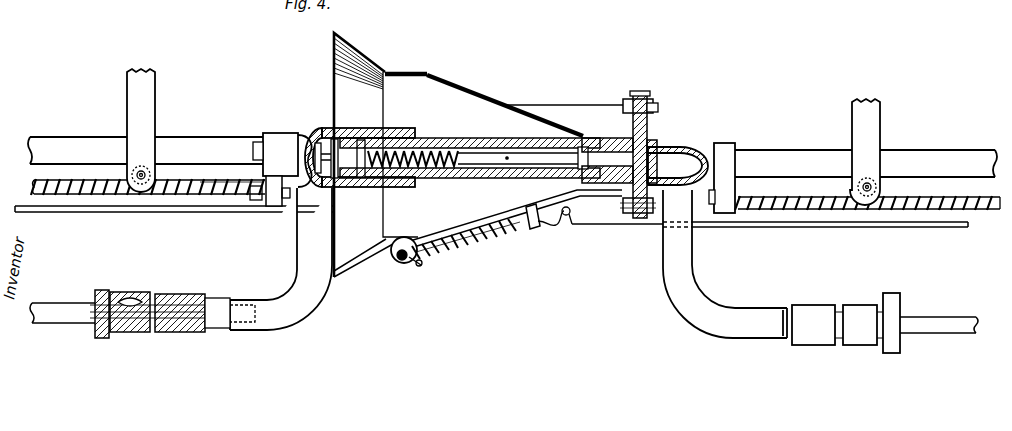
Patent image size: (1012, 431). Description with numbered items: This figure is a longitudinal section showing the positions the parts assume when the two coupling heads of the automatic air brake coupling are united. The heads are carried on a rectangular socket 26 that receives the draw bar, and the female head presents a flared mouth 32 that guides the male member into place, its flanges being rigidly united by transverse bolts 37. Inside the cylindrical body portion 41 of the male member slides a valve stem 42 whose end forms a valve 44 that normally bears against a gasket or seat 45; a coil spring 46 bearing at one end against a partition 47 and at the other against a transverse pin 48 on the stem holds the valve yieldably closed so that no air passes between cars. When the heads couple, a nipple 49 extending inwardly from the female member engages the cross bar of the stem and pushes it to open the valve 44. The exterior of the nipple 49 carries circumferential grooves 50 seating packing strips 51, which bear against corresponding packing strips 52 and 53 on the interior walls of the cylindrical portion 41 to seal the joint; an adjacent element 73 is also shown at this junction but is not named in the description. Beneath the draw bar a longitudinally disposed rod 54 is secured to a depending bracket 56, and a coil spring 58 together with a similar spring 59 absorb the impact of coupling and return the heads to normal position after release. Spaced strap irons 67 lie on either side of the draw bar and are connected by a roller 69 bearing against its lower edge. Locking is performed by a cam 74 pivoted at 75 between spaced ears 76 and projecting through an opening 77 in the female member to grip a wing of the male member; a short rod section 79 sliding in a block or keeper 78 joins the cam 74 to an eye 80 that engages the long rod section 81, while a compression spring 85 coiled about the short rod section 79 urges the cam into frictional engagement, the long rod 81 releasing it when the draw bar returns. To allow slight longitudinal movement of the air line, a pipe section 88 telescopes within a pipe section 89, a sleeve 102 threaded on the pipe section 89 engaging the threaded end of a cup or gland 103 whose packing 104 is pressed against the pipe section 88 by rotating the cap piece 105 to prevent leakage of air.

The rectangular socket 26 is at (731, 161).
The flared mouth 32 is at (365, 60).
The transverse bolts 37 is at (653, 103).
The cylindrical body portion 41 is at (517, 147).
The valve stem 42 is at (507, 157).
The valve 44 is at (292, 132).
The gasket or seat 45 is at (333, 127).
The coil spring 46 is at (440, 150).
The partition 47 is at (373, 132).
The transverse pin 48 is at (478, 150).
The nipple 49 is at (620, 142).
The circumferential grooves 50 is at (623, 213).
The packing strips 51 is at (701, 150).
The packing strip 52 is at (590, 140).
The packing strip 53 is at (648, 122).
The longitudinally disposed rod 54 is at (28, 187).
The bracket 56 is at (273, 203).
The coil spring 58 is at (67, 180).
The spring 59 is at (207, 185).
The strap irons 67 is at (144, 96).
The roller 69 is at (127, 194).
The sleeve 73 is at (650, 150).
The cam 74 is at (413, 273).
The pivot 75 is at (400, 272).
The spaced ears 76 is at (395, 262).
The opening 77 is at (388, 243).
The block or keeper 78 is at (535, 228).
The short rod section 79 is at (477, 258).
The eye 80 is at (567, 226).
The long rod section 81 is at (243, 213).
The compression spring 85 is at (511, 220).
The pipe section 88 is at (56, 302).
The pipe section 89 is at (285, 300).
The sleeve 102 is at (183, 300).
The cup or gland 103 is at (137, 292).
The packing 104 is at (128, 296).
The cap piece 105 is at (93, 329).